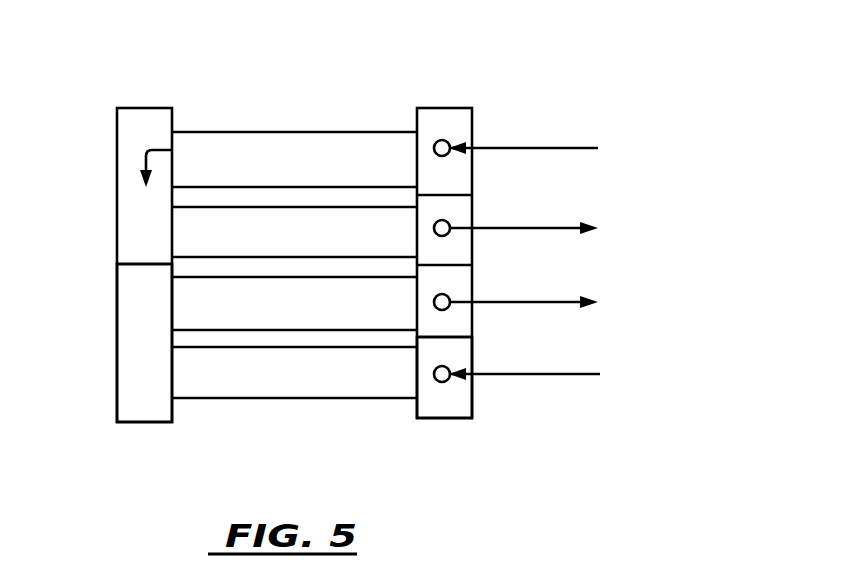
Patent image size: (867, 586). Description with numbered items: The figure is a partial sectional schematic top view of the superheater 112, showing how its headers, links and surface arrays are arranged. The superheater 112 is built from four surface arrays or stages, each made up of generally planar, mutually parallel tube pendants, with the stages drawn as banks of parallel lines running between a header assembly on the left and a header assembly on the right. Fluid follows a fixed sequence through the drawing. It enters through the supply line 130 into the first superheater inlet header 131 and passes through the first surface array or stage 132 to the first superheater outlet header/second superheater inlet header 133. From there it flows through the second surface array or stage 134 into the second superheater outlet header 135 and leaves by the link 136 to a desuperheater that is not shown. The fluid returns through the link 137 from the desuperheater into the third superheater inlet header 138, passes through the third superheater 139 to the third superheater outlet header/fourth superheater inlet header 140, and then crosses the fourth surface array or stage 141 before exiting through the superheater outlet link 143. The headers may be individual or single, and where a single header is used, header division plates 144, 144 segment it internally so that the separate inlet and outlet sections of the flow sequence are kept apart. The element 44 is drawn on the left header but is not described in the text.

The superheater 112 is at (658, 58).
The first superheater inlet header 131 is at (463, 108).
The first superheater outlet header/second superheater inlet header 133 is at (117, 123).
The supply line 130 is at (576, 148).
The first surface array or stage 132 is at (287, 132).
The second surface array or stage 134 is at (182, 226).
The second superheater outlet header 135 is at (472, 228).
The link to desuperheater 136 is at (568, 231).
The link from desuperheater 137 is at (583, 374).
The third superheater inlet header 138 is at (472, 393).
The third superheater 139 is at (305, 398).
The third superheater outlet header/fourth superheater inlet header 140 is at (124, 368).
The fourth surface array or stage 141 is at (185, 307).
The superheater outlet link 143 is at (520, 300).
The header division plates 144 is at (458, 195).
The separator 44 is at (130, 264).